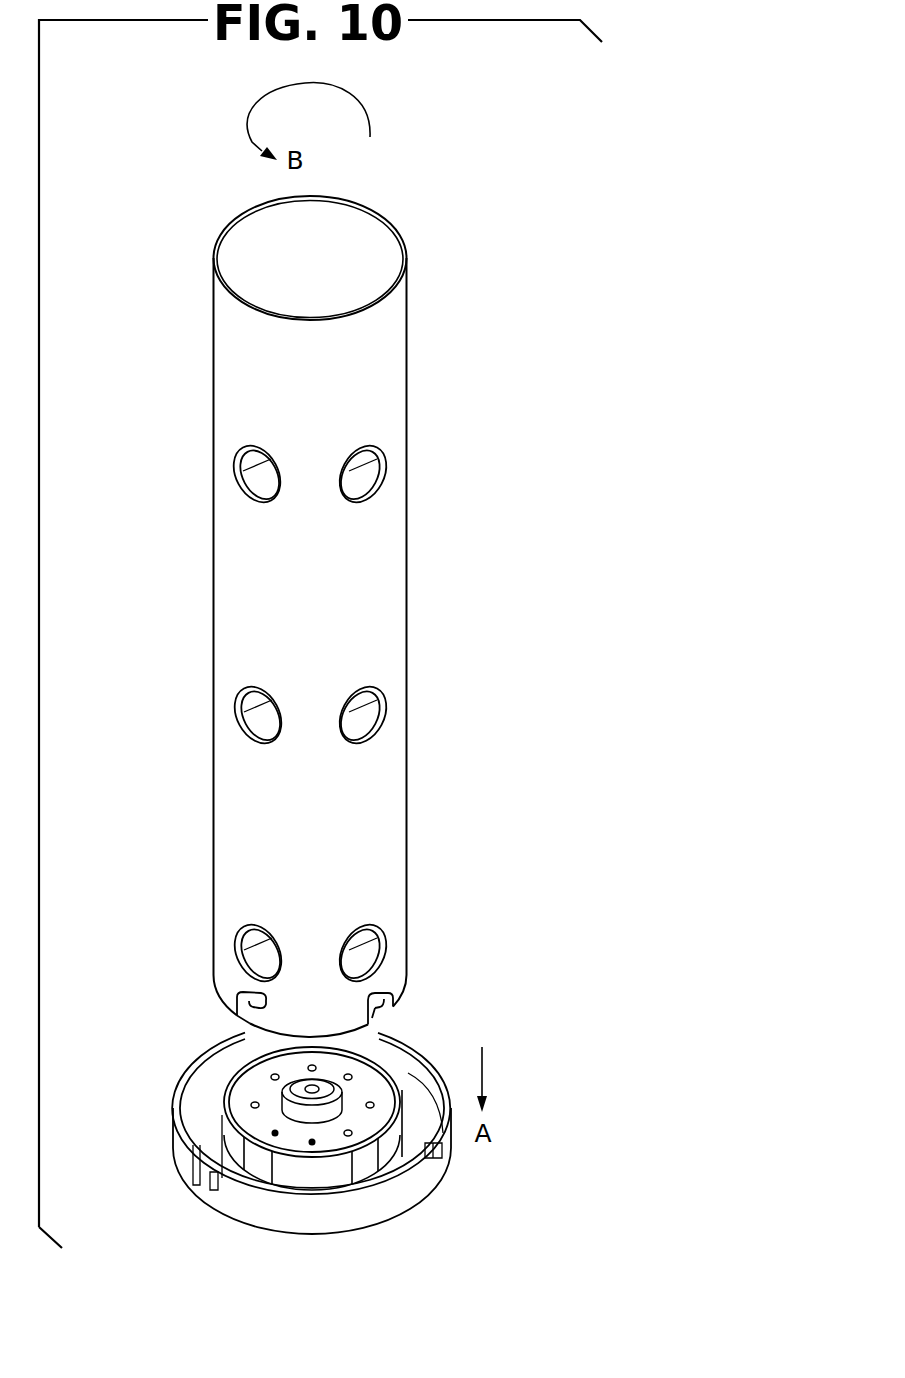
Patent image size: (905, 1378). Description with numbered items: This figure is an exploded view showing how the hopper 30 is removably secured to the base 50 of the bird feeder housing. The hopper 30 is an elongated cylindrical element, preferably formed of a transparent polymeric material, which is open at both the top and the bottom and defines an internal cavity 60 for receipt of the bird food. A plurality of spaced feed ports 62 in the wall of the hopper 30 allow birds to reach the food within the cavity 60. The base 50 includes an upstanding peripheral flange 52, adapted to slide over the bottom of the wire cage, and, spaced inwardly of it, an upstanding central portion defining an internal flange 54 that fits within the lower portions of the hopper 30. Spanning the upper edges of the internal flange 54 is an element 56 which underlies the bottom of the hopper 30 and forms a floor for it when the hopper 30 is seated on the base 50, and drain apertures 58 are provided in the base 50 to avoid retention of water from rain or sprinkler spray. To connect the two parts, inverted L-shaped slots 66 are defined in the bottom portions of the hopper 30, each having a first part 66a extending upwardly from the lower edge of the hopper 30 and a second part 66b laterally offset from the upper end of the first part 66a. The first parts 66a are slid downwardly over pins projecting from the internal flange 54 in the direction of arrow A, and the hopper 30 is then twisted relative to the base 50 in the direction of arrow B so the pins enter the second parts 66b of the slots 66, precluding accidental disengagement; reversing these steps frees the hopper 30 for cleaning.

The hopper 30 is at (418, 610).
The base 50 is at (334, 1146).
The peripheral flange 52 is at (414, 1050).
The internal flange 54 is at (332, 1173).
The floor element 56 is at (247, 1117).
The drain apertures 58 is at (275, 1134).
The cavity 60 is at (350, 240).
The feed ports 62 is at (250, 490).
The slots 66 is at (360, 1018).
The first part of slot 66a is at (382, 1014).
The second part of slot 66b is at (383, 1003).